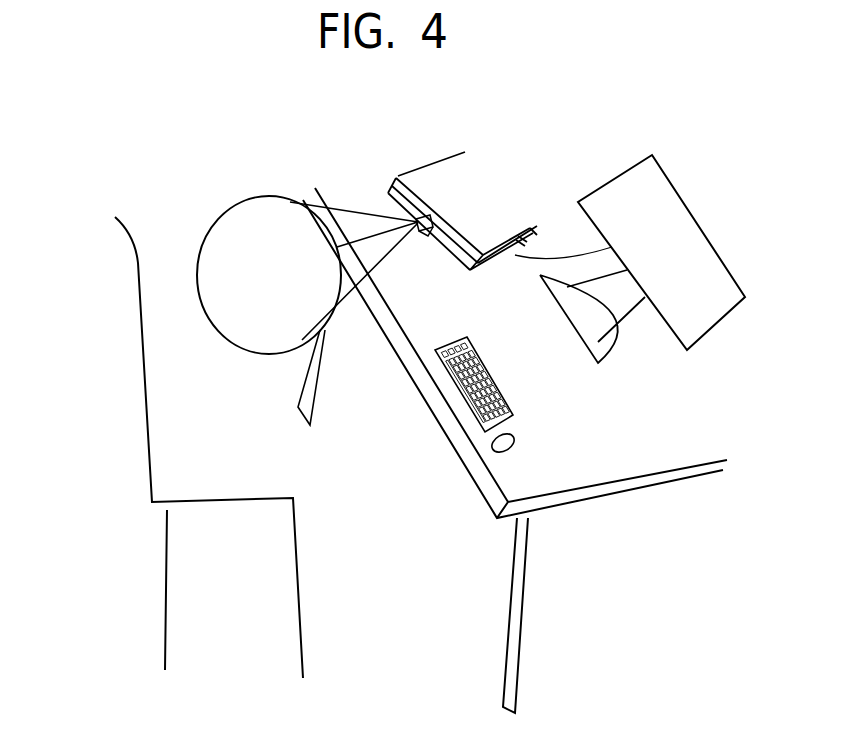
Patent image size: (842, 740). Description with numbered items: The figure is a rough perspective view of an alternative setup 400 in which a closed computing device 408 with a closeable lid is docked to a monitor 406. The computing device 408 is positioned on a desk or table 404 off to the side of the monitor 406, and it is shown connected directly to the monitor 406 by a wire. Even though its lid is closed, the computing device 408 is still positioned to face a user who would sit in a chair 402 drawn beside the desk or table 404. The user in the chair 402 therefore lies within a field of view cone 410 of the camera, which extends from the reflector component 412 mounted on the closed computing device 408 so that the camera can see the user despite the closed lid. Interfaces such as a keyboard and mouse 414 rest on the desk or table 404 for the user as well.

The alternative setup 400 is at (210, 121).
The chair 402 is at (150, 448).
The desk or table 404 is at (588, 450).
The monitor 406 is at (665, 205).
The computing device 408 is at (498, 201).
The field of view cone 410 is at (290, 307).
The reflector component 412 is at (433, 240).
The keyboard and mouse 414 is at (477, 407).